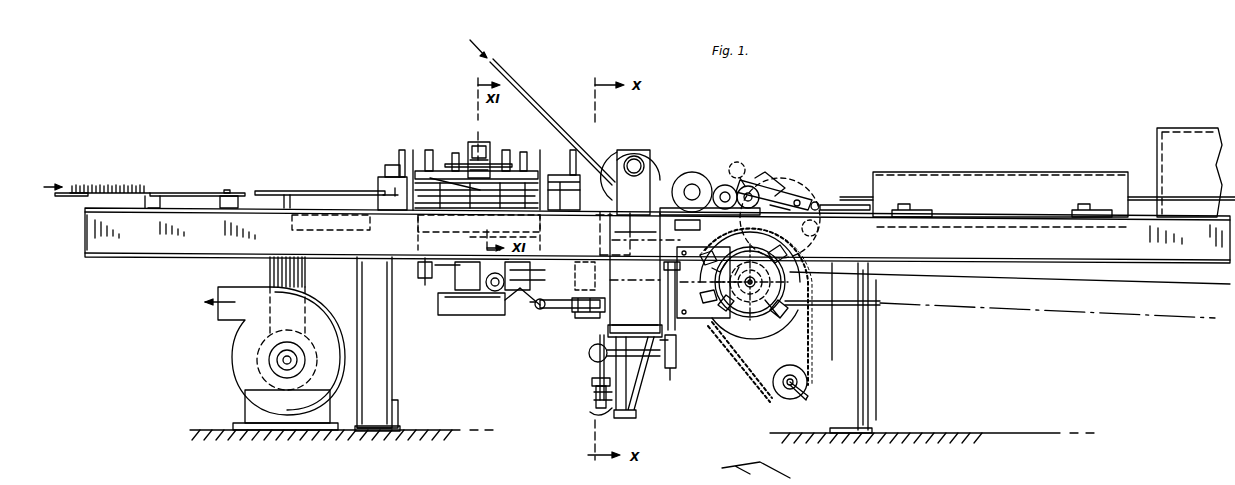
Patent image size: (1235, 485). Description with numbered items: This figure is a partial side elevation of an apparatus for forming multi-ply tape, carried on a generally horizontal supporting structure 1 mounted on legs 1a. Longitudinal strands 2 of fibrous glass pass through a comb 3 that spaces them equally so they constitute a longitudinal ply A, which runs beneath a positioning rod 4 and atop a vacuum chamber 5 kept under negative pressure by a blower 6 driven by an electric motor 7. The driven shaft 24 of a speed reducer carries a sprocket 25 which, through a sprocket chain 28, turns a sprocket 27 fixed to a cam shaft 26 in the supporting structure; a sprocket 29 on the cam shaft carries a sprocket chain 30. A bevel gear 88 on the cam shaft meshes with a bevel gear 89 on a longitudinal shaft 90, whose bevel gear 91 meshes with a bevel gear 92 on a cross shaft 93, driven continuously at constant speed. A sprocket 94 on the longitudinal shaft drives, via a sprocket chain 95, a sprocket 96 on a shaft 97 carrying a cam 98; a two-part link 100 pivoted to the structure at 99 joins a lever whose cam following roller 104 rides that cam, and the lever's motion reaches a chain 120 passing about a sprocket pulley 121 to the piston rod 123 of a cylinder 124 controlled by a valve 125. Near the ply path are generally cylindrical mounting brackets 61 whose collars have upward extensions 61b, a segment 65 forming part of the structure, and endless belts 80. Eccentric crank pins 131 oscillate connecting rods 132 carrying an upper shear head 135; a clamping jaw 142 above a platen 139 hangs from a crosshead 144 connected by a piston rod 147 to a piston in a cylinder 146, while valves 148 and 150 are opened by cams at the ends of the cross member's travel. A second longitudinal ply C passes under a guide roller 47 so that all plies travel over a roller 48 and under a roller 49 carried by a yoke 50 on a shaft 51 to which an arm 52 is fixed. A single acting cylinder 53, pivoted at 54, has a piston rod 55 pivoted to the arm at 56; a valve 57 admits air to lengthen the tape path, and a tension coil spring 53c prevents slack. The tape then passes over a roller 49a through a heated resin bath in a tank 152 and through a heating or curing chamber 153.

The supporting structure 1 is at (245, 236).
The legs 1a is at (381, 378).
The longitudinal strands 2 is at (58, 200).
The comb 3 is at (120, 190).
The longitudinal ply A is at (170, 192).
The positioning rod 4 is at (228, 190).
The vacuum chamber 5 is at (370, 240).
The blower 6 is at (252, 340).
The electric motor 7 is at (265, 362).
The driven shaft 24 is at (800, 392).
The sprocket 25 is at (775, 366).
The cam shaft 26 is at (750, 282).
The sprocket 27 is at (730, 345).
The sprocket chain 28 is at (748, 368).
The sprocket 29 is at (796, 294).
The sprocket chain 30 is at (870, 306).
The guide roller 47 is at (640, 147).
The roller 48 is at (680, 172).
The roller 49 is at (790, 190).
The roller 49a is at (840, 210).
The yoke 50 is at (717, 185).
The shaft 51 is at (700, 220).
The arm 52 is at (740, 165).
The single acting cylinder 53 is at (783, 199).
The tension coil spring 53c is at (800, 195).
The cylinder pivot 54 is at (818, 200).
The piston rod 55 is at (770, 175).
The pivot connection 56 is at (748, 186).
The valve 57 is at (716, 302).
The generally cylindrical mounting brackets 61 is at (380, 185).
The upward extension 61b is at (400, 160).
The segment 65 is at (318, 190).
The endless belts 80 is at (385, 170).
The bevel gear 88 is at (778, 258).
The bevel gear 89 is at (735, 266).
The longitudinal shaft 90 is at (548, 285).
The bevel gear 91 is at (515, 300).
The bevel gear 92 is at (486, 282).
The cross shaft 93 is at (486, 268).
The sprocket 94 is at (668, 300).
The sprocket chain 95 is at (672, 335).
The sprocket 96 is at (676, 360).
The shaft 97 is at (590, 352).
The cam 98 is at (600, 336).
The link pivot 99 is at (592, 382).
The two-part link 100 is at (596, 414).
The cam following roller 104 is at (596, 398).
The chain 120 is at (565, 304).
The sprocket pulley 121 is at (598, 320).
The piston rod 123 is at (540, 312).
The cylinder 124 is at (448, 316).
The valve 125 is at (711, 282).
The eccentric crank pins 131 is at (418, 275).
The connecting rods 132 is at (428, 240).
The upper shear head 135 is at (540, 170).
The platen 139 is at (478, 190).
The clamping jaw 142 is at (498, 192).
The crosshead 144 is at (455, 163).
The cylinder 146 is at (480, 142).
The piston rod 147 is at (490, 158).
The valve 148 is at (782, 318).
The valve 150 is at (738, 310).
The tank 152 is at (1020, 180).
The heating or curing chamber 153 is at (1172, 150).
The second longitudinal ply C is at (545, 112).